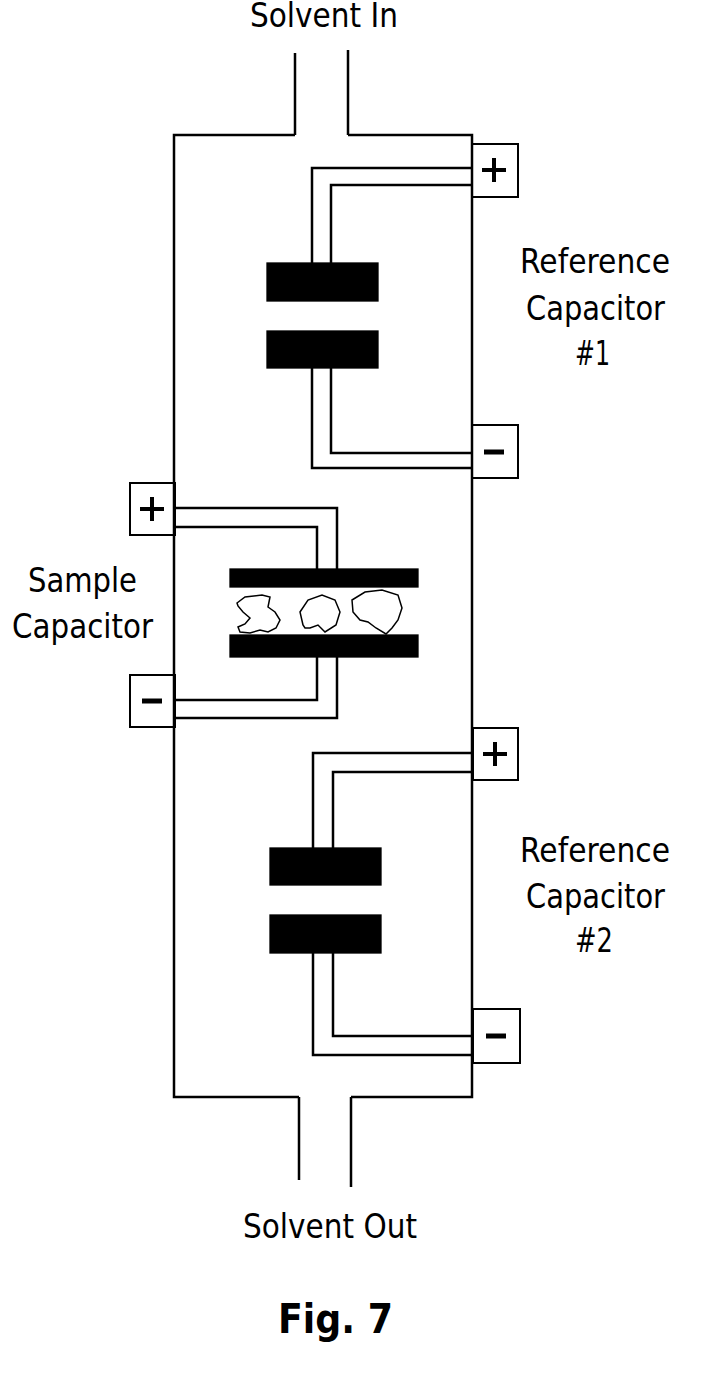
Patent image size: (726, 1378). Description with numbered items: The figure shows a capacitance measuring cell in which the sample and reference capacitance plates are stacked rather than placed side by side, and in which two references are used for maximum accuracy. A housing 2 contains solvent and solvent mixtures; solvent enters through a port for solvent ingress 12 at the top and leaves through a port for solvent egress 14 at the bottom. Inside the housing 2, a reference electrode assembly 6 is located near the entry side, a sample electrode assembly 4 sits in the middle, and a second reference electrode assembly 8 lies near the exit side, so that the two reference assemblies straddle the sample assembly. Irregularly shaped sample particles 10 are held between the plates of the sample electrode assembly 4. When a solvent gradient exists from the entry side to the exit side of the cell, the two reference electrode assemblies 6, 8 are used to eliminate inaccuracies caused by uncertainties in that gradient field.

The housing 2 is at (427, 117).
The sample electrode assembly 4 is at (430, 573).
The reference electrode assembly 6 is at (392, 264).
The second reference electrode assembly 8 is at (390, 852).
The irregularly shaped sample particles 10 is at (422, 615).
The port for solvent ingress 12 is at (370, 92).
The port for solvent egress 14 is at (362, 1153).